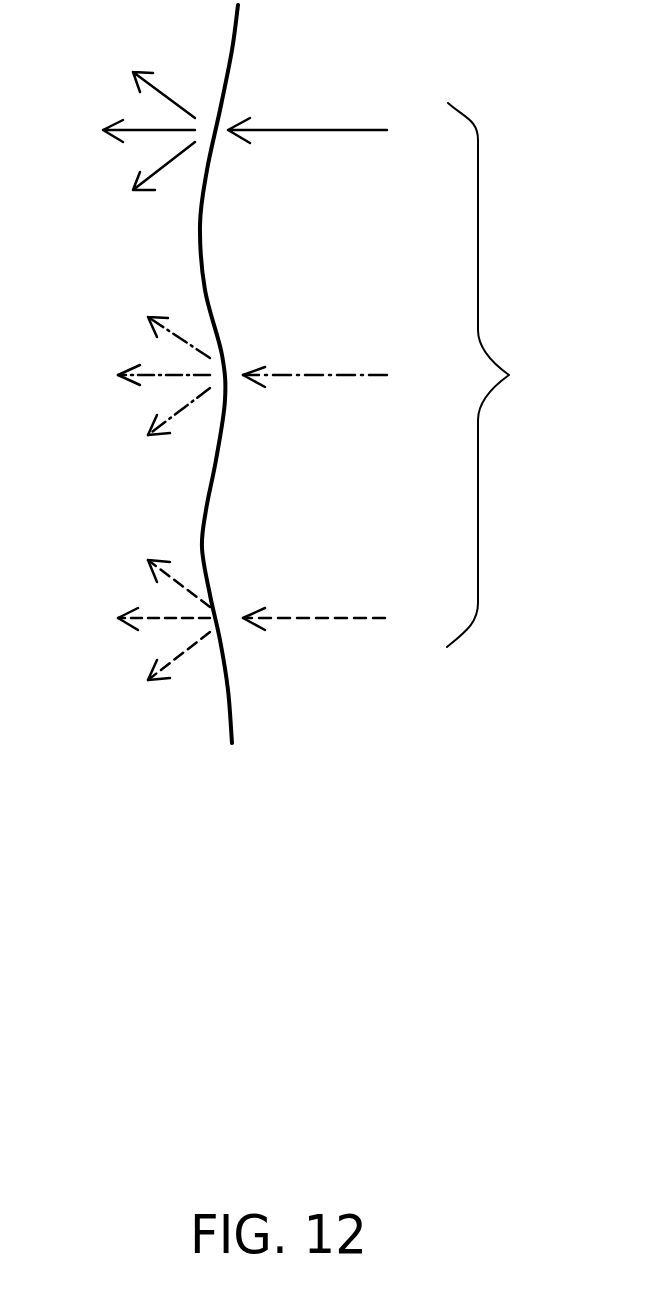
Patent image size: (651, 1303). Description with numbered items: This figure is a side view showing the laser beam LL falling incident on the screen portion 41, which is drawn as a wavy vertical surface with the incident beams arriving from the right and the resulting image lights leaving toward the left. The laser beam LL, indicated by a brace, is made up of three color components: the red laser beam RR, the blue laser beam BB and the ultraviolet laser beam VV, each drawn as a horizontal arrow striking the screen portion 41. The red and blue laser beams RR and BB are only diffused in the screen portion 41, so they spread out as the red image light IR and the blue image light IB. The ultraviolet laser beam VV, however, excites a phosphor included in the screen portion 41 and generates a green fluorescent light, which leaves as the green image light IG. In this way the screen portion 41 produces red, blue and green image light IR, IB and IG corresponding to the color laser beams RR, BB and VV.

The screen portion 41 is at (232, 720).
The red laser beam RR is at (295, 130).
The red image light IR is at (158, 130).
The blue laser beam BB is at (300, 375).
The blue image light IB is at (158, 370).
The ultraviolet laser beam VV is at (300, 618).
The green image light IG is at (158, 610).
The laser beam LL is at (497, 375).